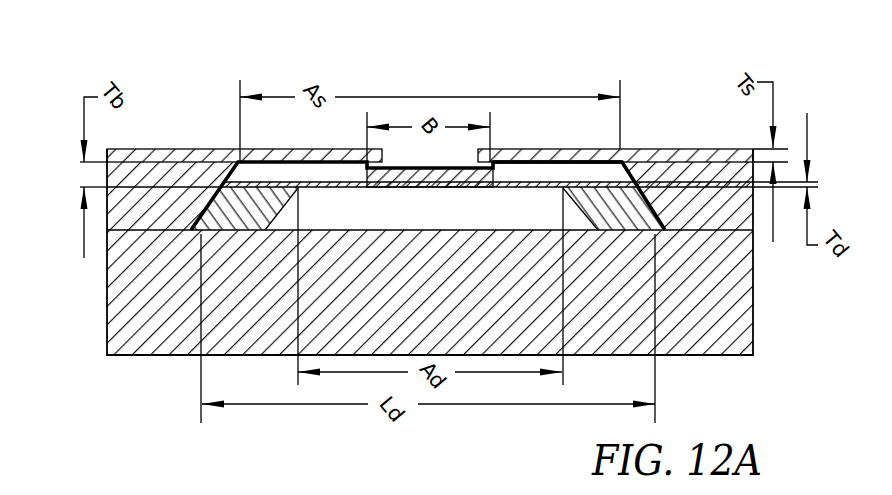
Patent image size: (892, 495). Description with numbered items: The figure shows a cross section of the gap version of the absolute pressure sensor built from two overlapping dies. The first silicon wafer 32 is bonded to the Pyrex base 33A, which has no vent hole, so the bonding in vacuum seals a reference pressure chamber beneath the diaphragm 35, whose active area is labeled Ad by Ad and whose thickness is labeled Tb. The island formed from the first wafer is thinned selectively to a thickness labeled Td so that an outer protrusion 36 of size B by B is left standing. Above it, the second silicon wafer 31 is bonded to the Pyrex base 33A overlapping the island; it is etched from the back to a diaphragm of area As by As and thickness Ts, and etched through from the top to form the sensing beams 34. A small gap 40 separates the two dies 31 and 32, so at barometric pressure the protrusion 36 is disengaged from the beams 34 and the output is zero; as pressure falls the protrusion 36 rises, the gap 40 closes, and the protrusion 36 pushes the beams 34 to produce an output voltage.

The second silicon wafer 31 is at (694, 157).
The first silicon wafer 32 is at (228, 170).
The Pyrex base 33A is at (722, 328).
The sensing beams 34 is at (578, 155).
The diaphragm 35 is at (317, 177).
The outer protrusion 36 is at (479, 158).
The gap 40 is at (540, 162).